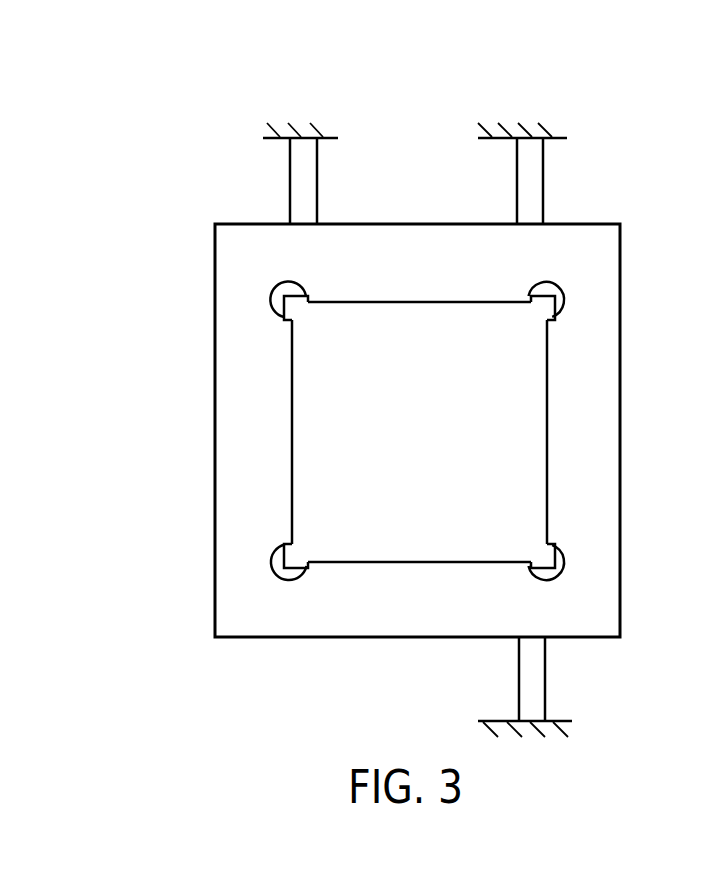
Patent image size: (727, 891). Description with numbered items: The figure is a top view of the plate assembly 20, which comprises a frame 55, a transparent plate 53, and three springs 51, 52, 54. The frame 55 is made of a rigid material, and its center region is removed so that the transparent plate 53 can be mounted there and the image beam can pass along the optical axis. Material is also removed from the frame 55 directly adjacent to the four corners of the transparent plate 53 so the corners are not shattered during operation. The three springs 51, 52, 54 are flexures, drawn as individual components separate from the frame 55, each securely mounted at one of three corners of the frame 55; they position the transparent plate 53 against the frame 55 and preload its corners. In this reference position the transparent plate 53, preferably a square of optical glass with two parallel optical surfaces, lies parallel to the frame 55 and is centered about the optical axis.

The plate assembly 20 is at (146, 381).
The spring 51 is at (517, 178).
The spring 52 is at (519, 678).
The transparent plate 53 is at (305, 455).
The spring 54 is at (290, 175).
The frame 55 is at (225, 262).